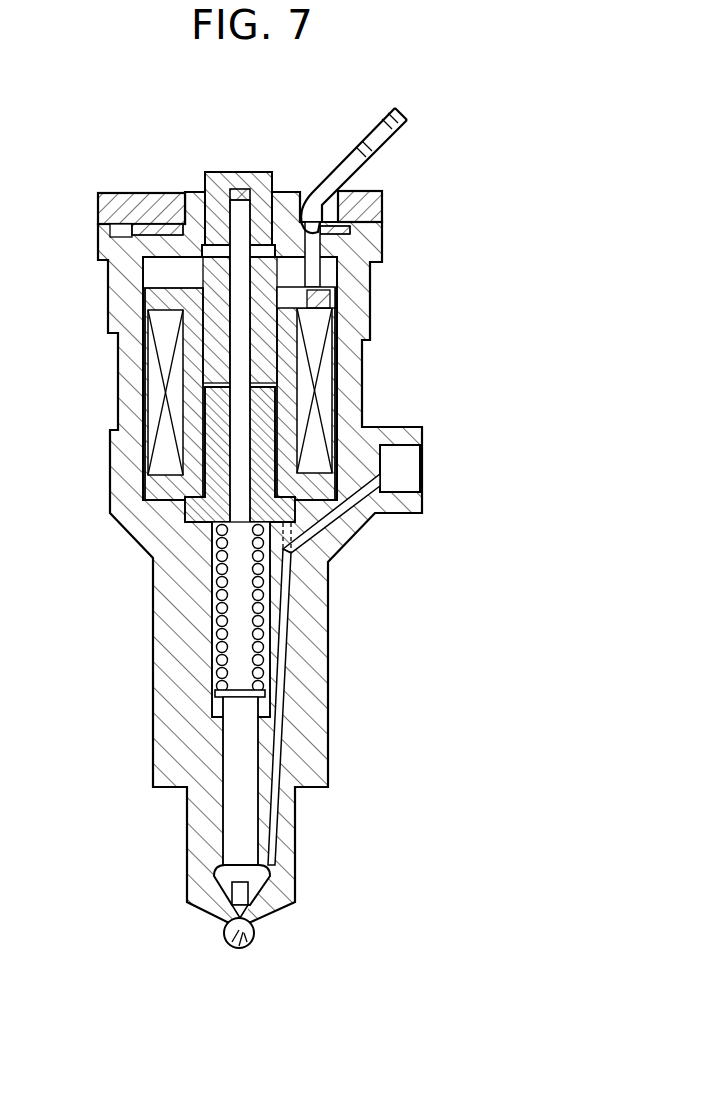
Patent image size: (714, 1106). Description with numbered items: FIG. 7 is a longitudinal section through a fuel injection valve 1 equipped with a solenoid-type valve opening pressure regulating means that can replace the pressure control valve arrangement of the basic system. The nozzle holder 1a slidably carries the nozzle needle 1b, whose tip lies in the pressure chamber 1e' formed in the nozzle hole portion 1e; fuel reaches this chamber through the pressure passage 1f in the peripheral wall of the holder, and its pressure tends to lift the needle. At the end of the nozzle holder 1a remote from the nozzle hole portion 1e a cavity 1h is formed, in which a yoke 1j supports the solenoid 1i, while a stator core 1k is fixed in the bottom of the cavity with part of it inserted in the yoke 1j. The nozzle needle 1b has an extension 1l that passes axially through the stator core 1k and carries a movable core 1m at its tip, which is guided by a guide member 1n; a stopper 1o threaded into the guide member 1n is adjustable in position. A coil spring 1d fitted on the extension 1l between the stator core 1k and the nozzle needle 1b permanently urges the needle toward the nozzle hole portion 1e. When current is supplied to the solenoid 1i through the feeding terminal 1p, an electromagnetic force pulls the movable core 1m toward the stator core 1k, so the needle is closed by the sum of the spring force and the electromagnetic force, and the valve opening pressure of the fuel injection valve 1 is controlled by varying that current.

The fuel injection valve 1 is at (350, 578).
The nozzle holder 1a is at (358, 318).
The nozzle needle 1b is at (243, 822).
The coil spring 1d is at (220, 617).
The nozzle hole portion 1e is at (261, 945).
The pressure chamber 1e' is at (199, 894).
The pressure passage 1f is at (282, 657).
The cavity 1h is at (140, 497).
The solenoid 1i is at (147, 386).
The yoke 1j is at (340, 520).
The stator core 1k is at (185, 527).
The extension 1l is at (242, 625).
The movable core 1m is at (260, 272).
The guide member 1n is at (196, 198).
The stopper 1o is at (262, 173).
The feeding terminal 1p is at (404, 118).